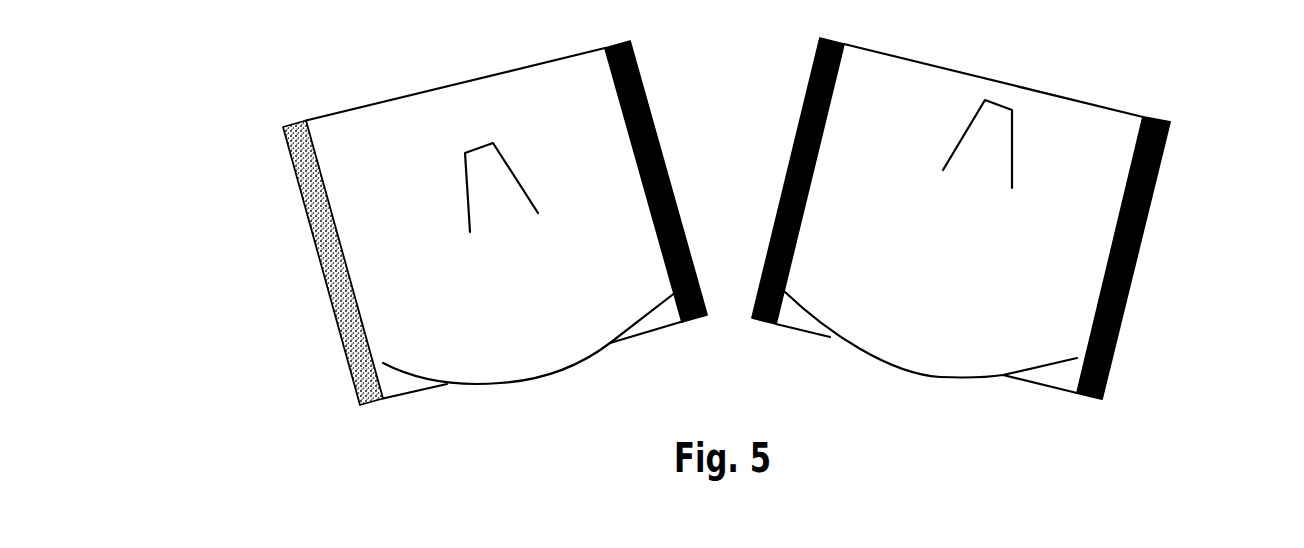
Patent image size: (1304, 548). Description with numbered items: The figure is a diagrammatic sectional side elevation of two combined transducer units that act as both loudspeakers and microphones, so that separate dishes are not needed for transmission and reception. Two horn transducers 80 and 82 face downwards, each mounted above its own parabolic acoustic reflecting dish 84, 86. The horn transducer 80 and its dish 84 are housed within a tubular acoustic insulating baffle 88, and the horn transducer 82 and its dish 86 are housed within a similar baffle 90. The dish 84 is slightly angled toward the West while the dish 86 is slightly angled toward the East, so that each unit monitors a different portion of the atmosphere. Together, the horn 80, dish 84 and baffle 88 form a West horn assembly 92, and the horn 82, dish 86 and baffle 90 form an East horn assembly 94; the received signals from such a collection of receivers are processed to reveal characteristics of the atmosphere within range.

The horn transducer 80 is at (499, 153).
The horn transducer 82 is at (1015, 148).
The parabolic acoustic reflecting dish 84 is at (490, 382).
The parabolic acoustic reflecting dish 86 is at (910, 373).
The tubular acoustic insulating baffle 88 is at (318, 267).
The tubular acoustic insulating baffle 90 is at (1142, 242).
The West horn assembly 92 is at (447, 223).
The East horn assembly 94 is at (1006, 218).